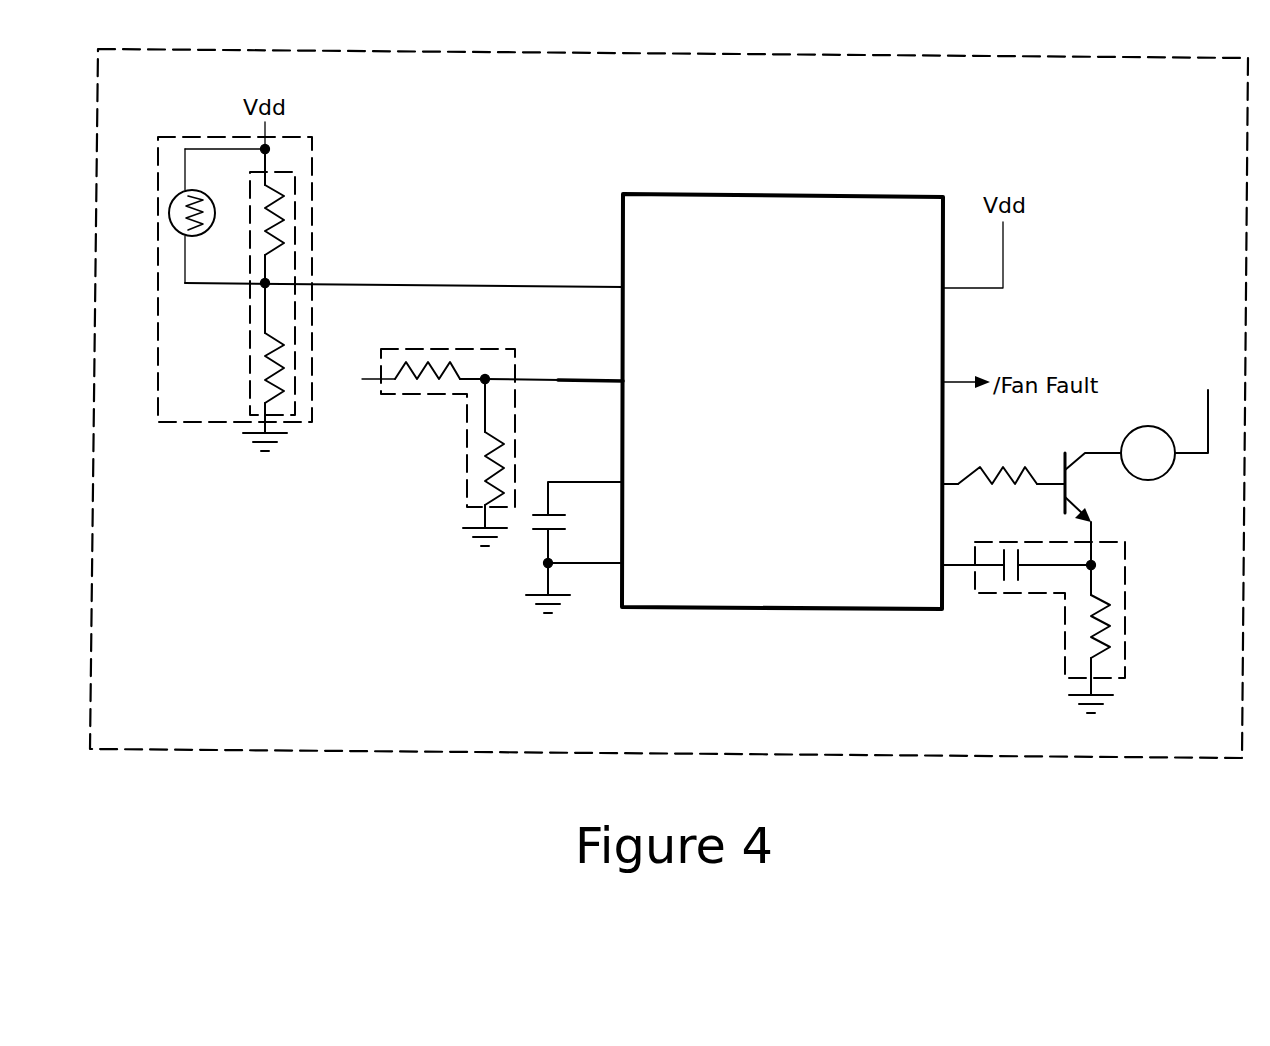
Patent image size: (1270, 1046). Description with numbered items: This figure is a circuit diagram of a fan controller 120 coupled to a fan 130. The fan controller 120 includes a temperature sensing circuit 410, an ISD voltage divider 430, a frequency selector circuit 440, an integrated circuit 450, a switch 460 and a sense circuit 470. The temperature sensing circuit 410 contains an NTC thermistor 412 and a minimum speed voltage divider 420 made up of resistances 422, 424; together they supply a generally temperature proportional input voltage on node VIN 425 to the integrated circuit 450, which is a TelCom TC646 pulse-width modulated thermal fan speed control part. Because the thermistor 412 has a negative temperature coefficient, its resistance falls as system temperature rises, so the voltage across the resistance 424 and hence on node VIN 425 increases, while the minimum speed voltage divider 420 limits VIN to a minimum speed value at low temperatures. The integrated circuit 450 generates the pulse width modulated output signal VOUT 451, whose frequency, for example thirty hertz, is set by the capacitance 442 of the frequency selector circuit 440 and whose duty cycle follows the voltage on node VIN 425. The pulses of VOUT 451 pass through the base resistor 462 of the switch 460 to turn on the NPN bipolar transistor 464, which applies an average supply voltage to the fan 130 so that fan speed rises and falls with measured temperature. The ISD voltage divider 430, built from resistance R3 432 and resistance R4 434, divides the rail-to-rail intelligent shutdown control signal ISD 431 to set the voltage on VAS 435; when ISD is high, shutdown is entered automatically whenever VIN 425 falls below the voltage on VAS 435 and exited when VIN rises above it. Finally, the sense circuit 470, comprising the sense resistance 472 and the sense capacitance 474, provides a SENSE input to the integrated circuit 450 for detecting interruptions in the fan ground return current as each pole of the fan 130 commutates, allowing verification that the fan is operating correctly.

The fan controller 120 is at (834, 55).
The fan 130 is at (1171, 474).
The temperature sensing circuit 410 is at (312, 227).
The NTC thermistor 412 is at (172, 227).
The minimum speed voltage divider 420 is at (277, 165).
The resistance 422 is at (273, 188).
The resistance 424 is at (275, 397).
The node VIN 425 is at (380, 284).
The ISD voltage divider 430 is at (515, 427).
The intelligent shutdown control signal ISD 431 is at (330, 370).
The resistance R3 432 is at (410, 390).
The resistance R4 434 is at (483, 480).
The VAS 435 is at (557, 375).
The frequency selector circuit 440 is at (512, 572).
The capacitance 442 is at (538, 513).
The integrated circuit 450 is at (710, 608).
The output signal VOUT 451 is at (957, 484).
The switch 460 is at (1075, 442).
The base resistor 462 is at (992, 486).
The NPN bipolar transistor 464 is at (1080, 515).
The sense circuit 470 is at (1068, 674).
The sense resistance 472 is at (1103, 655).
The sense capacitance 474 is at (1043, 597).